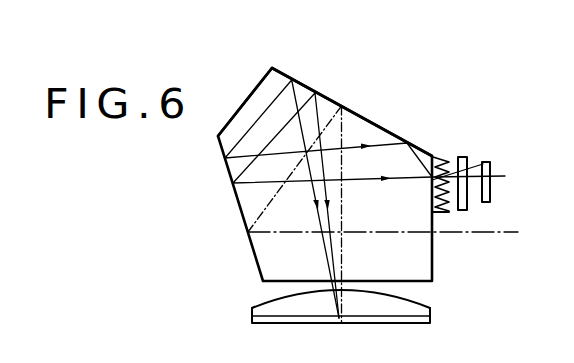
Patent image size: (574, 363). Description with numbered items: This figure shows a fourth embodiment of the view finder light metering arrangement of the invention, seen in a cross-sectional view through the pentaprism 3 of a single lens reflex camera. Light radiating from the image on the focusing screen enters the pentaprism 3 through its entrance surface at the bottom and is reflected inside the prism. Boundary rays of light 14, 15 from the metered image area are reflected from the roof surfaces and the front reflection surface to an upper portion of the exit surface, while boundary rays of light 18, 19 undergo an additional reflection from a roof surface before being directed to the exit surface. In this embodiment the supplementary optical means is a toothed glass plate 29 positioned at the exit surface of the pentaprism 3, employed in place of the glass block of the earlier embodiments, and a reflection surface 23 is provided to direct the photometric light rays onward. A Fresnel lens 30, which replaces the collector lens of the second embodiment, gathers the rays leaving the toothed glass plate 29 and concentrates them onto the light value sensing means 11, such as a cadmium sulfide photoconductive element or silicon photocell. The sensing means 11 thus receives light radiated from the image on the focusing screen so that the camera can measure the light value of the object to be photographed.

The pentaprism 3 is at (367, 132).
The boundary ray of light 14 is at (352, 104).
The boundary ray of light 15 is at (318, 108).
The boundary ray of light 18 is at (264, 76).
The boundary ray of light 19 is at (281, 88).
The toothed glass plate 29 is at (440, 157).
The reflection surface 23 is at (440, 214).
The Fresnel lens 30 is at (461, 212).
The light value sensing means 11 is at (491, 176).